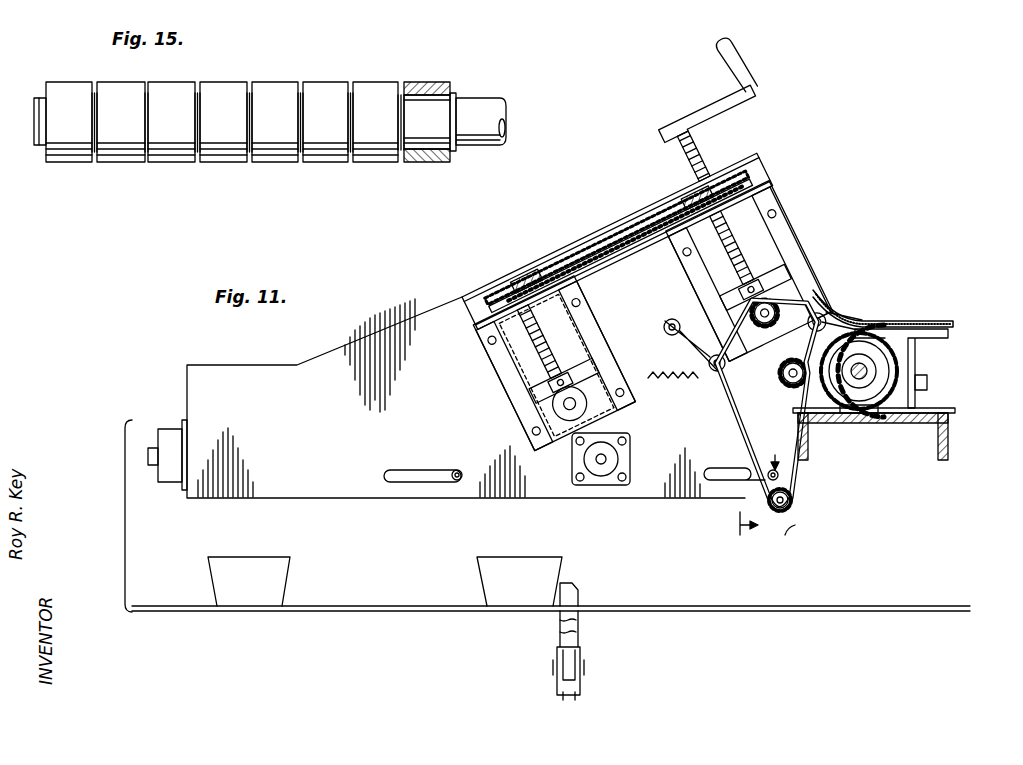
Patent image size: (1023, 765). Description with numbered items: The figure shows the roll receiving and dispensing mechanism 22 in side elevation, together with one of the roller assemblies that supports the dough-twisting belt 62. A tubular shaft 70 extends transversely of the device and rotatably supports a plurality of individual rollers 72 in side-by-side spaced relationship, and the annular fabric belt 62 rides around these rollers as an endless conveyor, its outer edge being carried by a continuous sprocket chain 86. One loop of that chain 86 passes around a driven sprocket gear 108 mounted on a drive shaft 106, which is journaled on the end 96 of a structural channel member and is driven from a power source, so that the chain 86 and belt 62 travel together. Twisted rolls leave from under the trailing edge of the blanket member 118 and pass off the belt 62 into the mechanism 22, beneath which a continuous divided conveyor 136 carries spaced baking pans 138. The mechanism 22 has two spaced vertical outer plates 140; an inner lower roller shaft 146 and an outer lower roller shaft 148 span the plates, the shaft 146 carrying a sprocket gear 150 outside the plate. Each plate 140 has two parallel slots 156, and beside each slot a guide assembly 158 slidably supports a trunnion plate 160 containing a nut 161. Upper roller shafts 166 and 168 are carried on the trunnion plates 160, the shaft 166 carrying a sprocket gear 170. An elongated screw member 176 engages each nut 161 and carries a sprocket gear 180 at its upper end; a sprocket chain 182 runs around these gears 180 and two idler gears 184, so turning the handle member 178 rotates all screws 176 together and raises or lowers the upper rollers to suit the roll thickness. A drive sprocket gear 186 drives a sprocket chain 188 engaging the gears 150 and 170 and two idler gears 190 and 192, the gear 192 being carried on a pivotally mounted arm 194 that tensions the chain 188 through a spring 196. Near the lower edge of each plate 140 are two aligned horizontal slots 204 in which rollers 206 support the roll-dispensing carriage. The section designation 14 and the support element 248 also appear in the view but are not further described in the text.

In FIG. 15, the rollers 72 is at (320, 88).
In FIG. 15, the tubular shaft 70 is at (480, 103).
In FIG. 11, the receiving and dispensing mechanism 22 is at (497, 266).
In FIG. 11, the outer plates 140 is at (420, 330).
In FIG. 11, the continuous divided conveyor 136 is at (830, 606).
In FIG. 11, the baking pans 138 is at (275, 574).
In FIG. 11, the support bracket 248 is at (575, 640).
In FIG. 11, the sprocket chain 182 is at (600, 250).
In FIG. 11, the idler gears 184 is at (647, 237).
In FIG. 11, the sprocket gear 180 is at (523, 275).
In FIG. 11, the handle member 178 is at (725, 106).
In FIG. 11, the guide assembly 158 is at (590, 337).
In FIG. 11, the screw member 176 is at (543, 325).
In FIG. 11, the slots 156 is at (540, 358).
In FIG. 11, the trunnion plate 160 is at (582, 375).
In FIG. 11, the nut 161 is at (547, 378).
In FIG. 11, the shaft 168 is at (568, 406).
In FIG. 11, the shaft 166 is at (766, 330).
In FIG. 11, the sprocket gear 170 is at (812, 302).
In FIG. 11, the idler gear 190 is at (840, 310).
In FIG. 11, the pivotally mounted arm 194 is at (691, 330).
In FIG. 11, the spring 196 is at (674, 389).
In FIG. 11, the idler gear 192 is at (716, 372).
In FIG. 11, the sprocket gear 150 is at (785, 380).
In FIG. 11, the shaft 146 is at (788, 380).
In FIG. 11, the sprocket chain 188 is at (730, 432).
In FIG. 11, the drive sprocket gear 186 is at (780, 527).
In FIG. 11, the rollers 206 is at (460, 482).
In FIG. 11, the horizontal slots 204 is at (418, 470).
In FIG. 11, the shaft 148 is at (606, 459).
In FIG. 11, the section line 14 is at (782, 494).
In FIG. 11, the blanket member 118 is at (890, 318).
In FIG. 11, the annular belt 62 is at (948, 340).
In FIG. 11, the drive shaft 106 is at (876, 364).
In FIG. 11, the driven sprocket gear 108 is at (882, 375).
In FIG. 11, the end 96 is at (890, 425).
In FIG. 11, the sprocket chain 86 is at (862, 414).